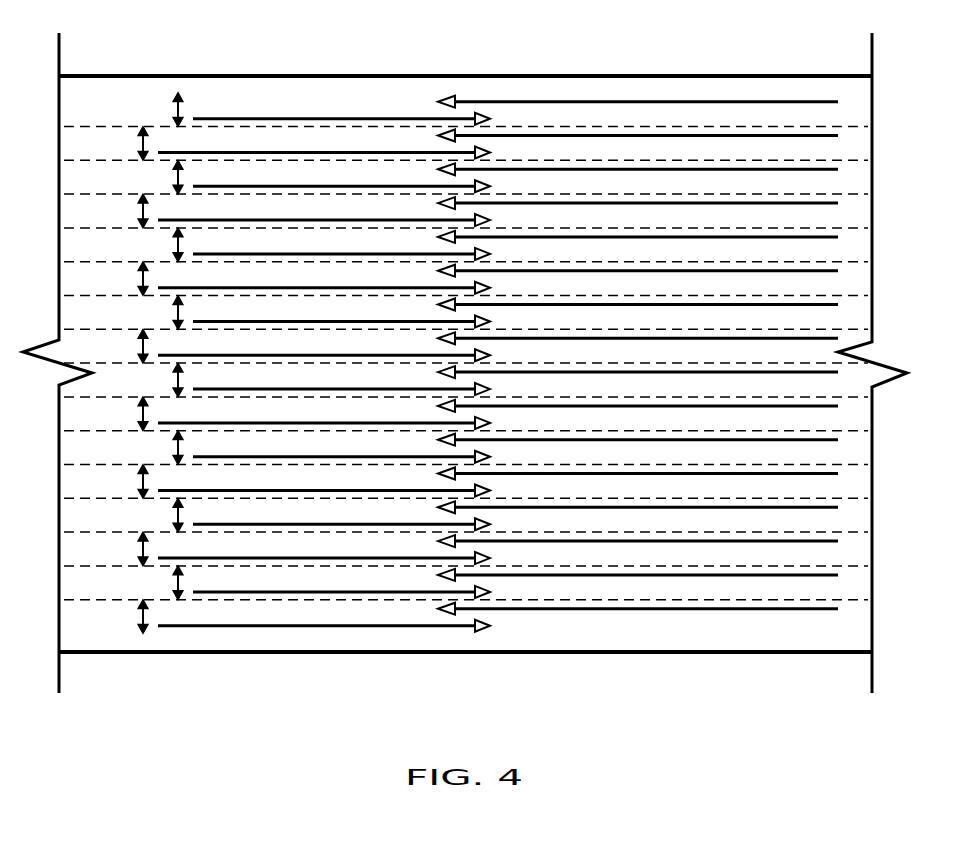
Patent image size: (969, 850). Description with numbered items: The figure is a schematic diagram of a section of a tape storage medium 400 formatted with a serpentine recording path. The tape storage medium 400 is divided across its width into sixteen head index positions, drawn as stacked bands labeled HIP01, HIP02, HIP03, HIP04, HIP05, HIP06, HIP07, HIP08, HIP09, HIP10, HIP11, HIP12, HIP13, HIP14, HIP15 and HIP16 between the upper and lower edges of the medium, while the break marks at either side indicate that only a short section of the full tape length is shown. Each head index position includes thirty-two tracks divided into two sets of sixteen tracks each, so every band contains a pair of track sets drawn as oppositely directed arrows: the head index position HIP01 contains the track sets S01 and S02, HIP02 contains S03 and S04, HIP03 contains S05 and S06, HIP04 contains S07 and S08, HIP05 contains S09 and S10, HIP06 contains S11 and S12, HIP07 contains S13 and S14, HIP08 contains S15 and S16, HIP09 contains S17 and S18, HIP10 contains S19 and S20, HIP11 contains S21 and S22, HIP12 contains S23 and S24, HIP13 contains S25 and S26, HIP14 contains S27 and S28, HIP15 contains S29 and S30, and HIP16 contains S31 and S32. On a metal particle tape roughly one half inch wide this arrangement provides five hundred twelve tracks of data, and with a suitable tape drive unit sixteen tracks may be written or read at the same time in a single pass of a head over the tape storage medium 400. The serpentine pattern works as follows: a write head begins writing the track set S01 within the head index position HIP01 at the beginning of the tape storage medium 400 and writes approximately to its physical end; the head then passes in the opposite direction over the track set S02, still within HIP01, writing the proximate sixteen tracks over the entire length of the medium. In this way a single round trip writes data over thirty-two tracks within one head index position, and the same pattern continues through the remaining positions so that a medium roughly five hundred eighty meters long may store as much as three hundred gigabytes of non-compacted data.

The tape storage medium 400 is at (668, 74).
The track set S01 is at (346, 627).
The track set S02 is at (615, 610).
The track set S03 is at (364, 593).
The track set S04 is at (615, 576).
The track set S05 is at (346, 560).
The track set S06 is at (615, 542).
The track set S07 is at (364, 526).
The track set S08 is at (615, 508).
The track set S09 is at (346, 492).
The track set S10 is at (615, 475).
The track set S11 is at (364, 458).
The track set S12 is at (615, 441).
The track set S13 is at (346, 424).
The track set S14 is at (615, 407).
The track set S15 is at (364, 391).
The track set S16 is at (615, 373).
The track set S17 is at (346, 357).
The track set S18 is at (615, 339).
The track set S19 is at (364, 323).
The track set S20 is at (615, 306).
The track set S21 is at (346, 289).
The track set S22 is at (615, 272).
The track set S23 is at (364, 255).
The track set S24 is at (615, 238).
The track set S25 is at (346, 222).
The track set S26 is at (615, 204).
The track set S27 is at (364, 188).
The track set S28 is at (615, 170).
The track set S29 is at (346, 154).
The track set S30 is at (615, 137).
The track set S31 is at (364, 120).
The track set S32 is at (615, 103).
The head index position HIP01 is at (107, 617).
The head index position HIP02 is at (141, 583).
The head index position HIP03 is at (107, 549).
The head index position HIP04 is at (141, 515).
The head index position HIP05 is at (107, 482).
The head index position HIP06 is at (141, 448).
The head index position HIP07 is at (107, 414).
The head index position HIP08 is at (141, 380).
The head index position HIP09 is at (107, 346).
The head index position HIP10 is at (141, 313).
The head index position HIP11 is at (107, 279).
The head index position HIP12 is at (141, 245).
The head index position HIP13 is at (107, 211).
The head index position HIP14 is at (141, 177).
The head index position HIP15 is at (107, 144).
The head index position HIP16 is at (141, 110).